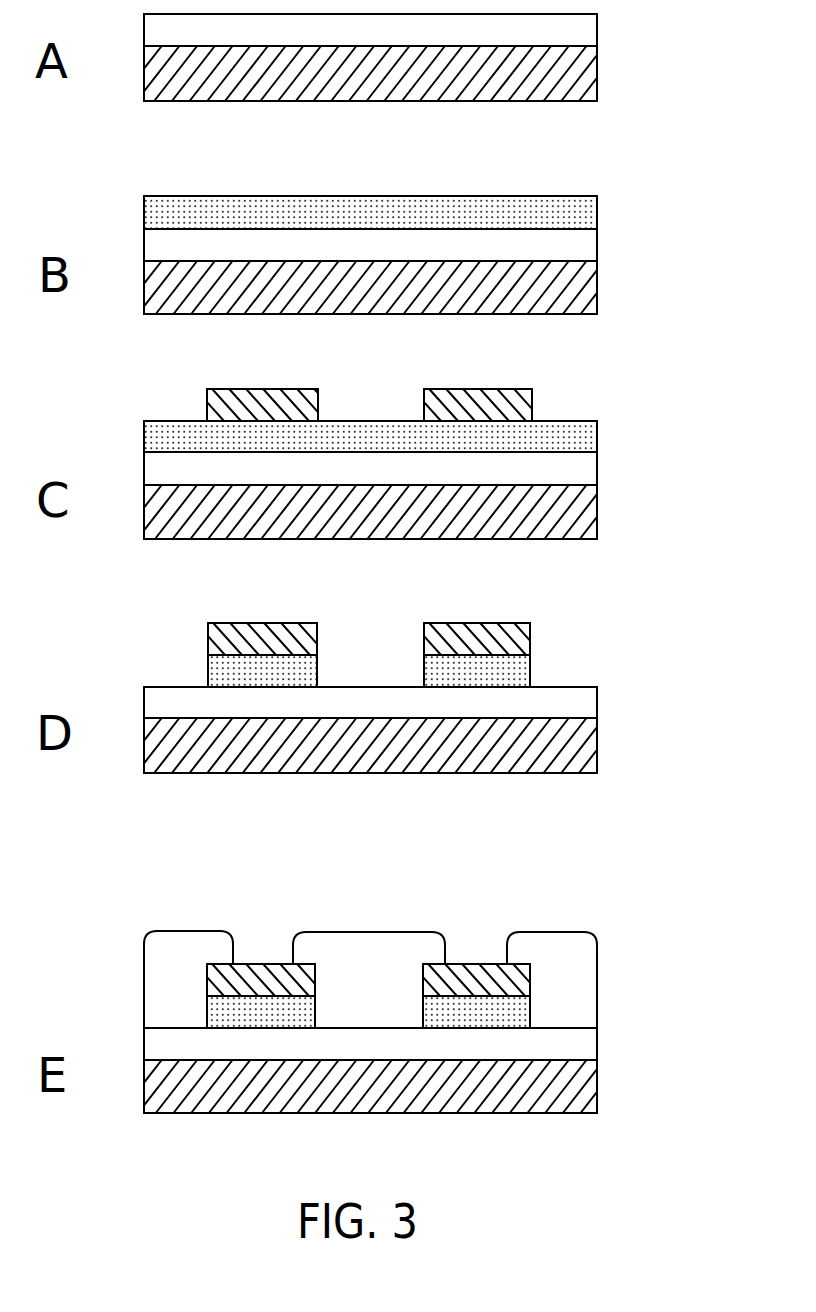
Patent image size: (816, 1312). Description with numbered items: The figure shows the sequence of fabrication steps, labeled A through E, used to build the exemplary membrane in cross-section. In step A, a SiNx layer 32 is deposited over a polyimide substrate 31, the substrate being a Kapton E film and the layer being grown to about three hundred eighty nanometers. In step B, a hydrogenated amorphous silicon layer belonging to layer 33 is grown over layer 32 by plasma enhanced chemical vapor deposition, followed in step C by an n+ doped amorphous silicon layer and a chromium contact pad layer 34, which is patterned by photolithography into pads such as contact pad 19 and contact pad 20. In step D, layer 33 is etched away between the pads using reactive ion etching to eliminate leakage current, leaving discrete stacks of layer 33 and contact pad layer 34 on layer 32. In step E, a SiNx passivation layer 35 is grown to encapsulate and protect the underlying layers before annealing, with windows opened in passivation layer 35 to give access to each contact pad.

The substrate 31 is at (597, 74).
The layer 32 is at (597, 29).
The layer 33 is at (597, 211).
The contact pad layer 34 is at (208, 632).
The contact pad 19 is at (188, 622).
The contact pad 20 is at (388, 637).
The passivation layer 35 is at (142, 938).